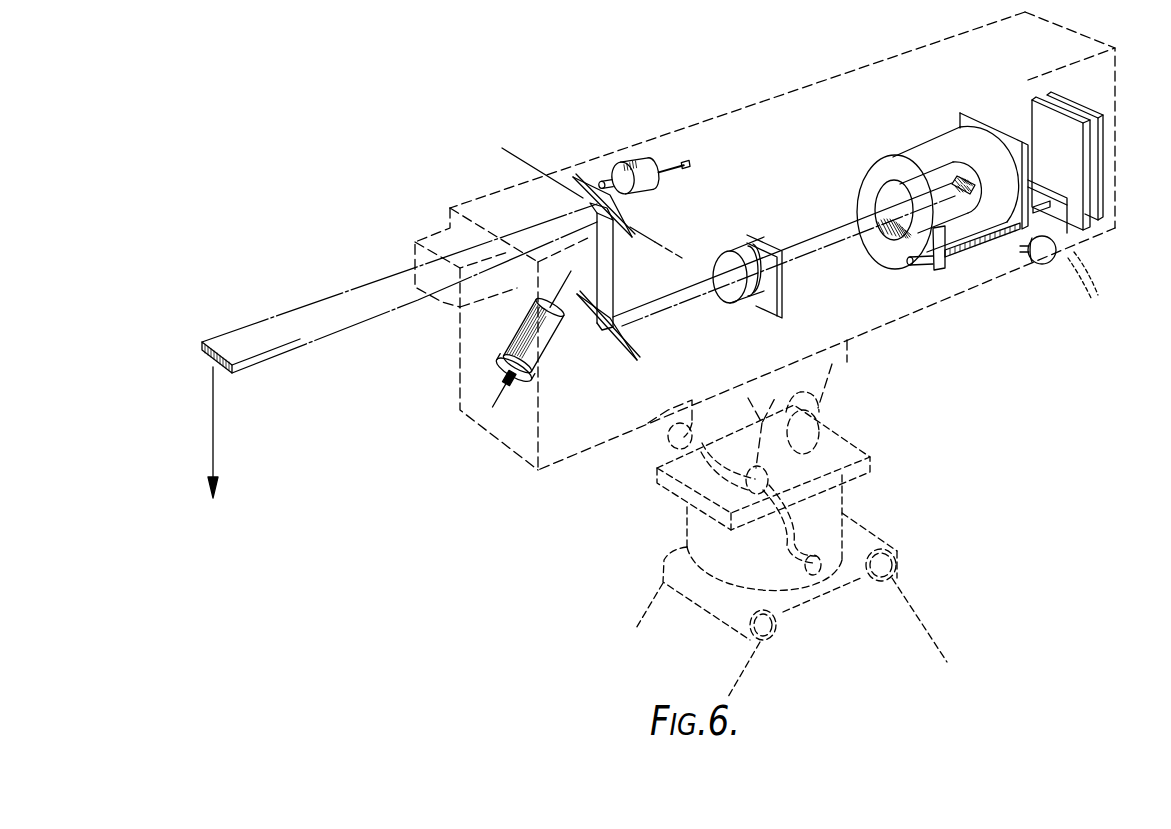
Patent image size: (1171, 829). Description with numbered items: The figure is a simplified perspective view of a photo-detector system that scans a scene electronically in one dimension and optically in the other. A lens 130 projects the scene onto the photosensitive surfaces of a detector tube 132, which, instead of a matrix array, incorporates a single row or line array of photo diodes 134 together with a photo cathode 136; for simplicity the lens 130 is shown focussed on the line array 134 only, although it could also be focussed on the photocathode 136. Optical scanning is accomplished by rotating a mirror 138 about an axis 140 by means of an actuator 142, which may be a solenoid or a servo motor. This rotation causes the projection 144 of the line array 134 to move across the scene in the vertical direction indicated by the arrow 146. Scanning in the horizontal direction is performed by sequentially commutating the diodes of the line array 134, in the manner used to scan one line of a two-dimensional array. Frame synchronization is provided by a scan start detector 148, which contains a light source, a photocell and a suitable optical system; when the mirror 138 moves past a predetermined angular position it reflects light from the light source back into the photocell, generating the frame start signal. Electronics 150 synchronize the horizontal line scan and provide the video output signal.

The lens 130 is at (742, 255).
The detector tube 132 is at (946, 207).
The line array of photo diodes 134 is at (963, 178).
The photo cathode 136 is at (887, 240).
The mirror 138 is at (583, 176).
The axis 140 is at (515, 157).
The actuator 142 is at (632, 160).
The projection of line array 144 is at (212, 362).
The arrow 146 is at (215, 429).
The scan start detector 148 is at (537, 368).
The electronics 150 is at (1087, 157).